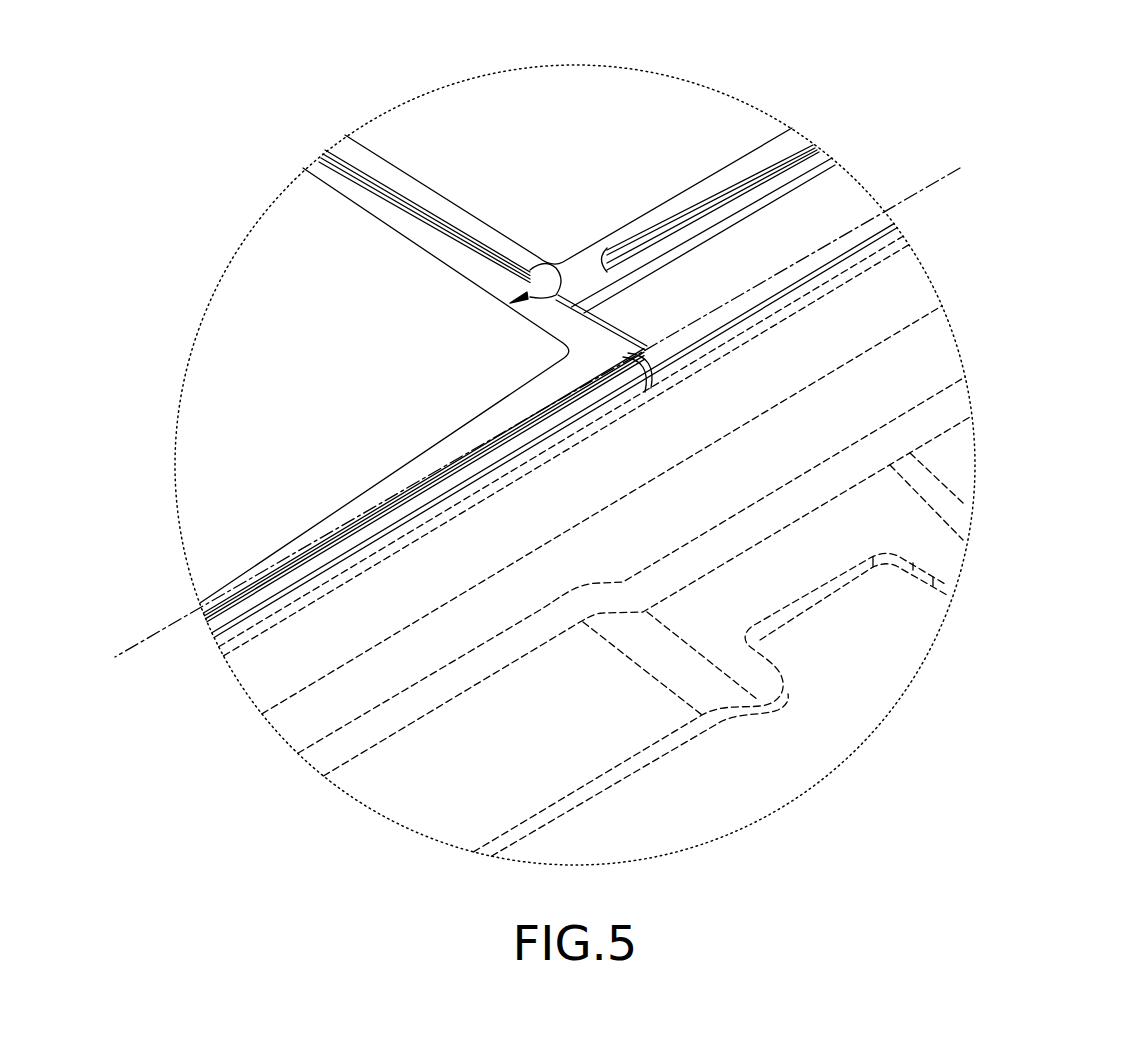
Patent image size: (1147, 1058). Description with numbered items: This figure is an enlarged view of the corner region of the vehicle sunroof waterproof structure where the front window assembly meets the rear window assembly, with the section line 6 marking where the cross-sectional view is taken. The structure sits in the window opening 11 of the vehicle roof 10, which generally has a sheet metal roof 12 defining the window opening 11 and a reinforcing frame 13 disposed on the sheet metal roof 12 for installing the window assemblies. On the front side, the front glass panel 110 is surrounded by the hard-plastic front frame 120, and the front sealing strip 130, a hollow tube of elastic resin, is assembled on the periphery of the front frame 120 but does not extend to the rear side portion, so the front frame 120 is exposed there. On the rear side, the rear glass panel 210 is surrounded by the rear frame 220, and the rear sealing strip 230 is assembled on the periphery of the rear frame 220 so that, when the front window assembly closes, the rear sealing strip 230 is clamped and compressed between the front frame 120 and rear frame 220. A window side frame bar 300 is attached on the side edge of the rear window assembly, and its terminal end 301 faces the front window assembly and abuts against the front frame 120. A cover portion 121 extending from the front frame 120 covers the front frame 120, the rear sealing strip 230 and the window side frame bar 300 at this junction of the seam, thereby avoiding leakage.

The vehicle roof 10 is at (1077, 528).
The window opening 11 is at (270, 598).
The sheet metal roof 12 is at (913, 520).
The reinforcing frame 13 is at (895, 620).
The section line 6- 6 is at (960, 168).
The front glass panel 110 is at (237, 312).
The front frame 120 is at (350, 185).
The cover portion 121 is at (582, 328).
The front sealing strip 130 is at (515, 448).
The rear glass panel 210 is at (712, 118).
The rear frame 220 is at (395, 178).
The rear sealing strip 230 is at (632, 267).
The window side frame bar 300 is at (823, 203).
The terminal end 301 is at (623, 313).